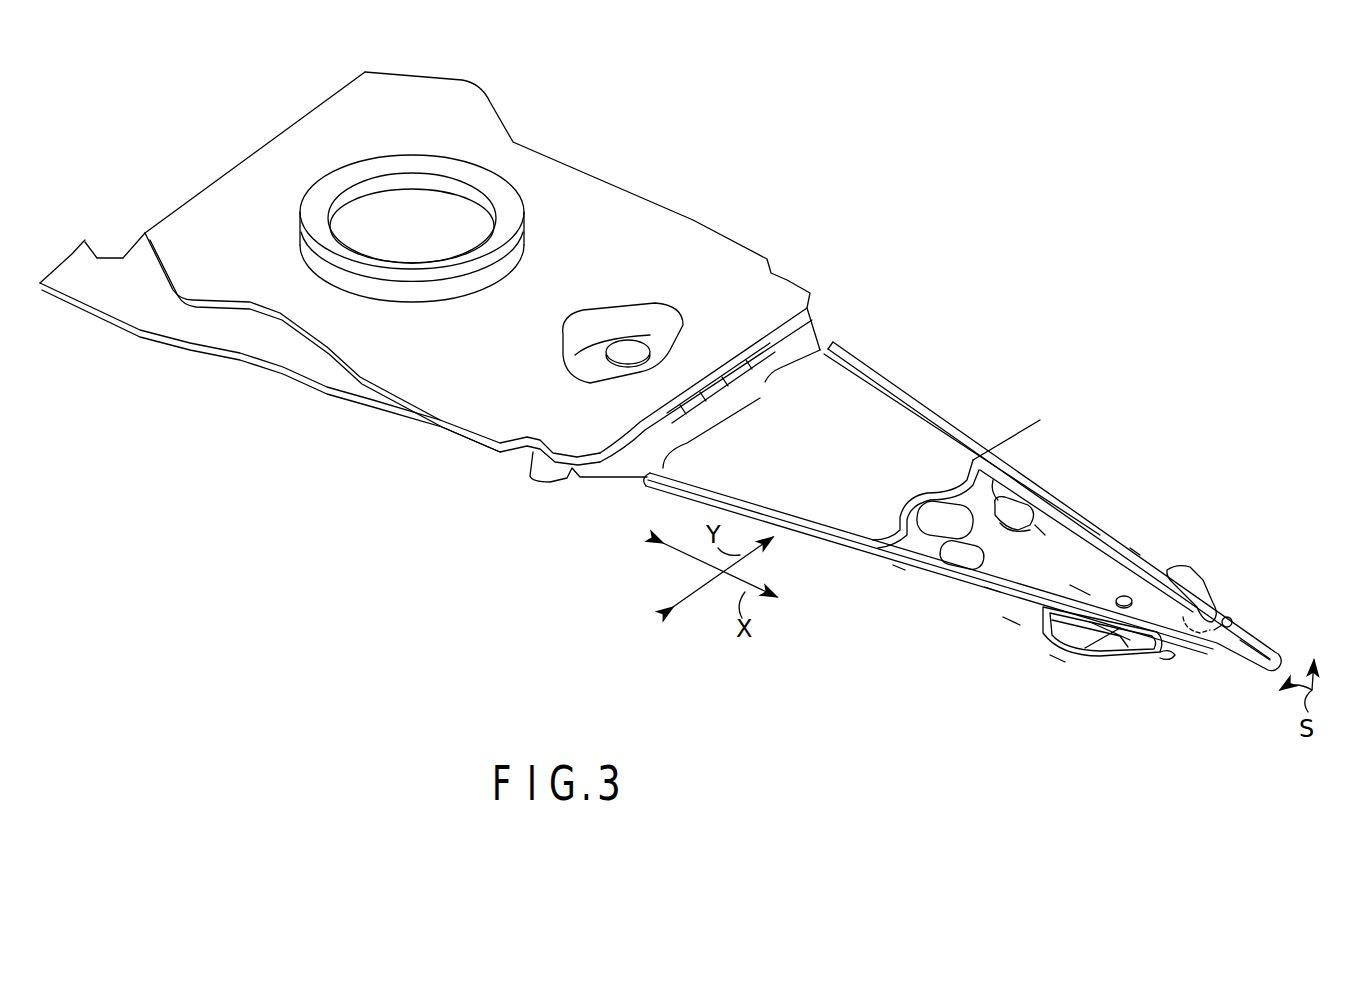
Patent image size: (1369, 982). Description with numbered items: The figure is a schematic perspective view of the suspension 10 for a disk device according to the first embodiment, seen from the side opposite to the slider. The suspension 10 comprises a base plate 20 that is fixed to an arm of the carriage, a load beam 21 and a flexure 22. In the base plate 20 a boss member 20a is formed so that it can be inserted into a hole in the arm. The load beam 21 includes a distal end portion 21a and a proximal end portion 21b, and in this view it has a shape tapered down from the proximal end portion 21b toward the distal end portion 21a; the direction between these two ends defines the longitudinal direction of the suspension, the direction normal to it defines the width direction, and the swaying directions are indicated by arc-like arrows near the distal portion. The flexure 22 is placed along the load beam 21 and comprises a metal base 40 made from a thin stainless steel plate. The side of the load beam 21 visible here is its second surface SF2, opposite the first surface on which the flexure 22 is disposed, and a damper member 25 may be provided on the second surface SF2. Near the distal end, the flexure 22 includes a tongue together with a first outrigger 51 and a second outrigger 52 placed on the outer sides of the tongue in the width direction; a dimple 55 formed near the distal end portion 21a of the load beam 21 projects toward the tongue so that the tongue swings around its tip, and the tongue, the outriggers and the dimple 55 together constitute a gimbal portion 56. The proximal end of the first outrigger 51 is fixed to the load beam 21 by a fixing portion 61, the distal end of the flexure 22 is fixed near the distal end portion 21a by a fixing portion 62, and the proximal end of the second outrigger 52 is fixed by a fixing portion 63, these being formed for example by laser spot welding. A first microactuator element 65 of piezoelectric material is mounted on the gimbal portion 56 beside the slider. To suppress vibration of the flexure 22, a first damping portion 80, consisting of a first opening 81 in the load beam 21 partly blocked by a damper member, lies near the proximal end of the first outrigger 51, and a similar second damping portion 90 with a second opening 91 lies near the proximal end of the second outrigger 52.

The suspension 10 is at (890, 150).
The base plate 20 is at (600, 200).
The boss member 20a is at (493, 190).
The load beam 21 is at (950, 427).
The distal end portion 21a is at (1290, 645).
The proximal end portion 21b is at (718, 402).
The flexure 22 is at (1135, 543).
The damper member 25 is at (872, 433).
The metal base 40 is at (272, 352).
The first outrigger 51 is at (1003, 617).
The second outrigger 52 is at (1127, 598).
The dimple 55 is at (1190, 620).
The gimbal portion 56 is at (1050, 657).
The fixing portion 61 is at (893, 565).
The fixing portion 62 is at (1203, 608).
The fixing portion 63 is at (1000, 482).
The first microactuator element 65 is at (1093, 623).
The first damping portion 80 is at (985, 587).
The first opening 81 is at (945, 577).
The second damping portion 90 is at (1033, 493).
The second opening 91 is at (1040, 530).
The second surface SF2 is at (1073, 583).